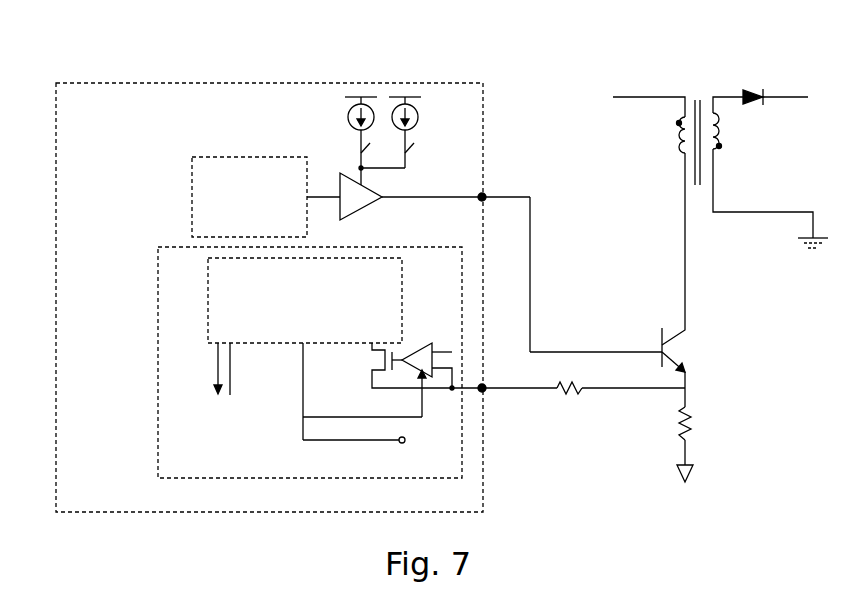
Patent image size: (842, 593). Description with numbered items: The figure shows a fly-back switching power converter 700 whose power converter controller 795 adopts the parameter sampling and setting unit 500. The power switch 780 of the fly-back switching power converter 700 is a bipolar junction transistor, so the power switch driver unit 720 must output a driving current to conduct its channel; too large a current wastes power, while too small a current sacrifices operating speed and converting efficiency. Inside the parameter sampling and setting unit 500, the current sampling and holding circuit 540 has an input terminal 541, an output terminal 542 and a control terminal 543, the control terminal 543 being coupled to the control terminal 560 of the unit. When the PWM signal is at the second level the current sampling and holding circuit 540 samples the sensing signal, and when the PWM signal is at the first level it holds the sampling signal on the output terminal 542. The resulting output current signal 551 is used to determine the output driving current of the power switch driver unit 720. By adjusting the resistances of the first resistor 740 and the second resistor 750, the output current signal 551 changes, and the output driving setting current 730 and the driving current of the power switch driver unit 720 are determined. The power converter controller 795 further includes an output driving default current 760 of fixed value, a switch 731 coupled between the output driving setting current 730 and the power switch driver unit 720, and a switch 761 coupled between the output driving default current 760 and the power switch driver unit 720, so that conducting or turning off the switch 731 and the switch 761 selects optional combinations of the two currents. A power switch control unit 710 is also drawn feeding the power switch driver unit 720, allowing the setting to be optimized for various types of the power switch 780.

The fly-back switching power converter 700 is at (48, 37).
The power converter controller 795 is at (90, 112).
The power switch control unit 710 is at (236, 229).
The power switch driver unit 720 is at (368, 205).
The output driving setting current 730 is at (348, 117).
The switch 731 is at (358, 150).
The output driving default current 760 is at (418, 117).
The switch 761 is at (418, 150).
The parameter sampling and setting unit 500 is at (190, 268).
The current sampling and holding circuit 540 is at (380, 299).
The input terminal 541 is at (386, 338).
The output terminal 542 is at (244, 338).
The control terminal 543 is at (318, 338).
The output current signal 551 is at (214, 372).
The control terminal 560 is at (403, 445).
The power switch 780 is at (688, 352).
The second resistor 750 is at (567, 396).
The first resistor 740 is at (694, 425).